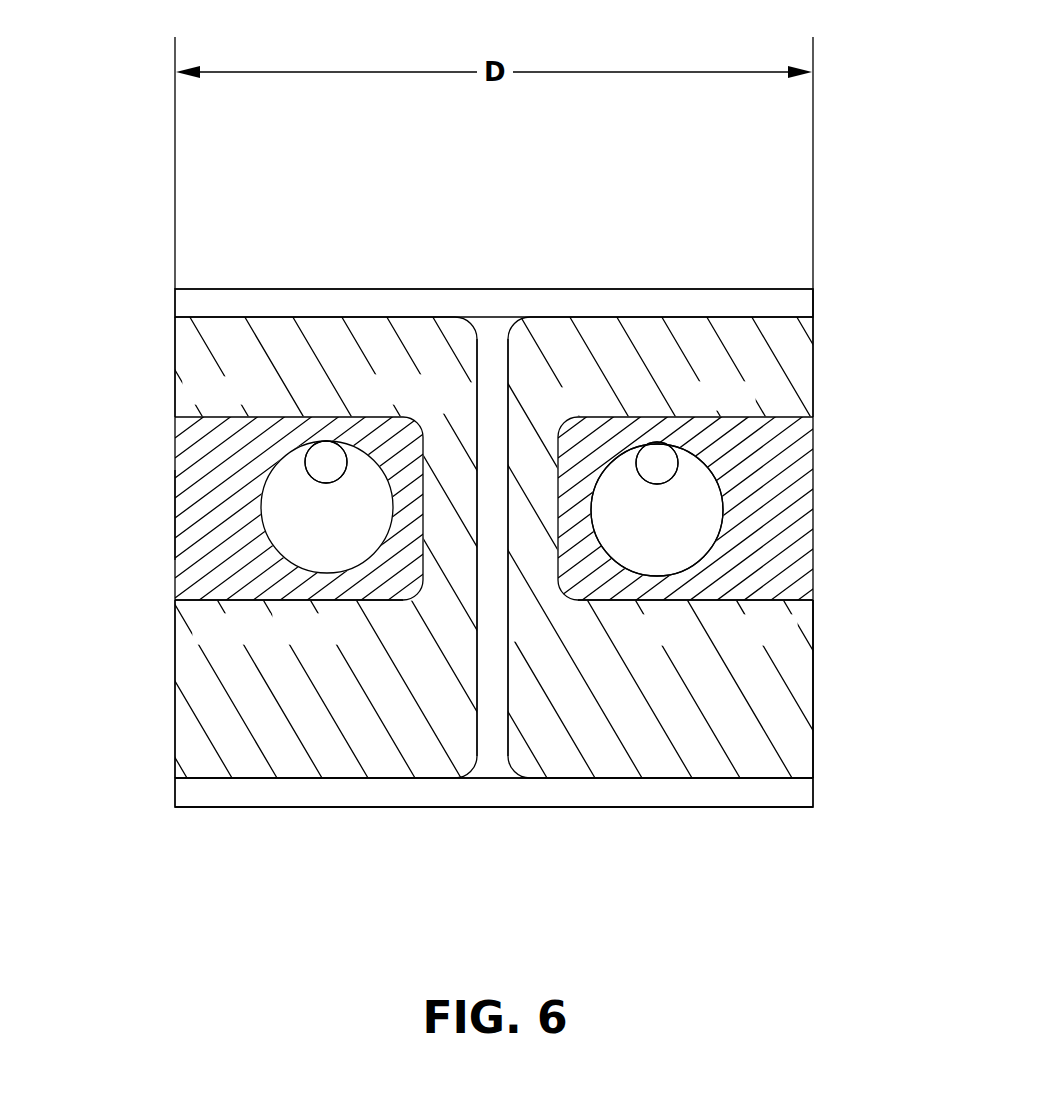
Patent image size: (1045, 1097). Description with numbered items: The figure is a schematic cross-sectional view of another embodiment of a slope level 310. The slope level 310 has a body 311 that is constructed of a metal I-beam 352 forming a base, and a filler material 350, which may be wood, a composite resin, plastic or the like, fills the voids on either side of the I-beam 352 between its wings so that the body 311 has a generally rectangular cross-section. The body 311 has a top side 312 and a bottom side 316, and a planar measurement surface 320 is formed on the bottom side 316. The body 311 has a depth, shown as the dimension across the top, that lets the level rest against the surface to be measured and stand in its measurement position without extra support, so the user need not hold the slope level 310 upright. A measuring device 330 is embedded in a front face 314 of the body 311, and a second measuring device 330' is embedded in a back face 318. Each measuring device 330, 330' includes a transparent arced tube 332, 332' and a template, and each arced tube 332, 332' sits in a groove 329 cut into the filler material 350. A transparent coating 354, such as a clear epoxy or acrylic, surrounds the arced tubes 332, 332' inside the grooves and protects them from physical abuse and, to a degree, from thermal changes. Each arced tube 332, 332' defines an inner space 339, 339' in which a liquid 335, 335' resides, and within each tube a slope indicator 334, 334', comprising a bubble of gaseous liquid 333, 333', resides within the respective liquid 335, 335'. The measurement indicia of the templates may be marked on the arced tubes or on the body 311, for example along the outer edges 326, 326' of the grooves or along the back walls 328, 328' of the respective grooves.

The slope level 310 is at (707, 283).
The body 311 is at (813, 326).
The top side 312 is at (288, 288).
The front face 314 is at (813, 412).
The bottom side 316 is at (600, 808).
The back face 318 is at (175, 402).
The planar measurement surface 320 is at (278, 808).
The outer edge 326 is at (646, 523).
The outer edge 326' is at (352, 523).
The back wall 328 is at (634, 603).
The back wall 328' is at (340, 609).
The groove 329 is at (416, 455).
The measuring device 330 is at (733, 510).
The second measuring device 330' is at (105, 529).
The arced tube 332 is at (728, 482).
The arced tube 332' is at (309, 482).
The bubble of gaseous liquid 333 is at (693, 433).
The bubble of gaseous liquid 333' is at (364, 429).
The slope indicator 334 is at (610, 435).
The slope indicator 334' is at (267, 429).
The liquid 335 is at (743, 604).
The liquid 335' is at (237, 604).
The inner space 339 is at (733, 510).
The inner space 339' is at (248, 504).
The filler material 350 is at (172, 743).
The I-beam 352 is at (395, 808).
The transparent coating 354 is at (174, 494).